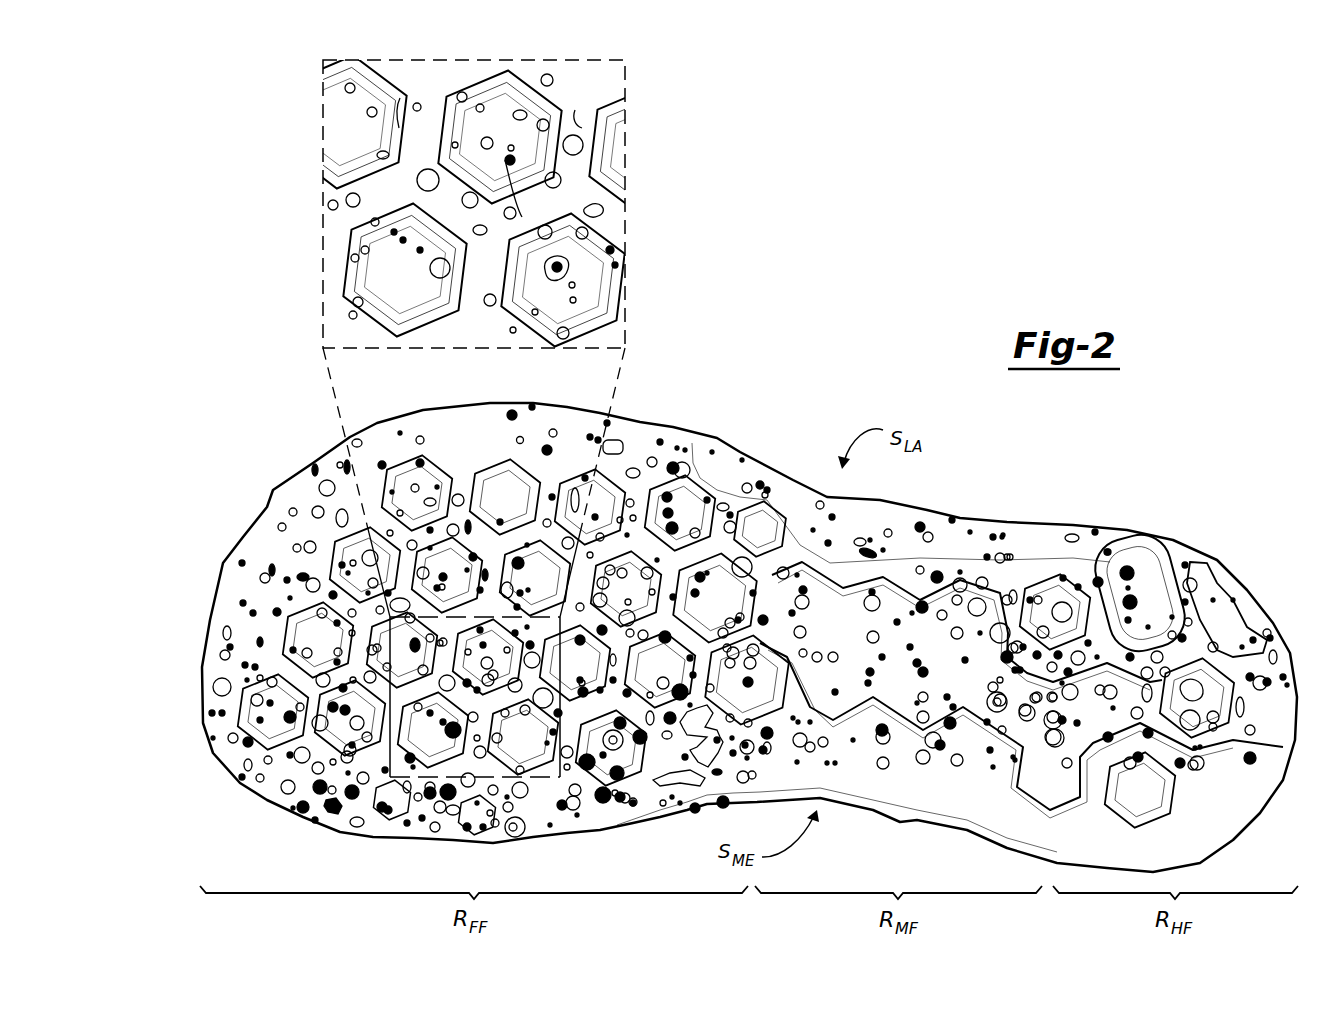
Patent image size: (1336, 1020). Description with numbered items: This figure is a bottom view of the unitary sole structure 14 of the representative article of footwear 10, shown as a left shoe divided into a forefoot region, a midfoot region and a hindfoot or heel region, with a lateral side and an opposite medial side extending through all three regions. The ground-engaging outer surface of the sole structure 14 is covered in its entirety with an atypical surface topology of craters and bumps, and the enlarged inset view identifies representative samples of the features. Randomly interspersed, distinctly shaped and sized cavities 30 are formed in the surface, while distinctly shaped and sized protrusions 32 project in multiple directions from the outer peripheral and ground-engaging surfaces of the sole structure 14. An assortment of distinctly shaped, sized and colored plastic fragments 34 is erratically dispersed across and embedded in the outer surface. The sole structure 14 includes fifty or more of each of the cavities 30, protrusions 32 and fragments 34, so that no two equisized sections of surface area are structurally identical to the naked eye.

The article of footwear 10 is at (1178, 456).
The sole structure 14 is at (254, 812).
The cavities 30 is at (357, 302).
The protrusions 32 is at (555, 180).
The plastic fragments 34 is at (400, 98).